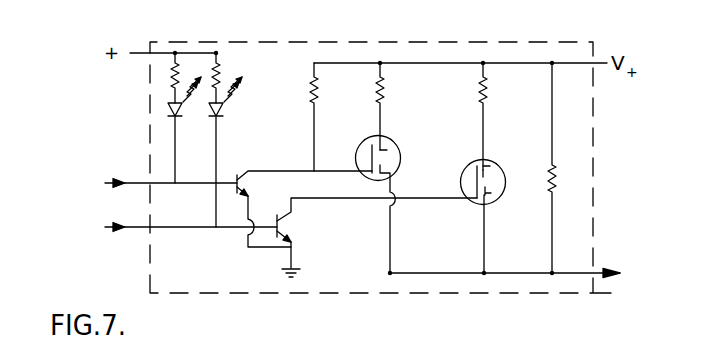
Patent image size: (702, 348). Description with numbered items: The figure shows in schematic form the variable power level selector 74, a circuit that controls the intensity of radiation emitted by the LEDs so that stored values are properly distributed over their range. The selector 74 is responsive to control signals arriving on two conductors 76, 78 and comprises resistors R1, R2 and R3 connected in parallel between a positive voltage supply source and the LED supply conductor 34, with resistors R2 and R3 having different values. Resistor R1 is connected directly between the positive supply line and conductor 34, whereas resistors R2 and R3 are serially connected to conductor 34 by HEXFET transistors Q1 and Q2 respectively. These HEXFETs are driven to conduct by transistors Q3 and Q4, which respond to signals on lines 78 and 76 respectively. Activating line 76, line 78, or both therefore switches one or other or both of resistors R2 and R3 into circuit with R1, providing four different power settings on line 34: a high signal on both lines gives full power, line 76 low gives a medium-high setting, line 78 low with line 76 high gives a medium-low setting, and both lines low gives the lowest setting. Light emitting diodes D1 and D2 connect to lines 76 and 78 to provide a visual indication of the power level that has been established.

The LED supply conductor 34 is at (597, 272).
The variable power level selector 74 is at (466, 294).
The conductor 76 is at (157, 184).
The conductor 78 is at (177, 228).
The light emitting diode D1 is at (230, 140).
The light emitting diode D2 is at (184, 118).
The HEXFET transistor Q1 is at (505, 178).
The HEXFET transistor Q2 is at (400, 165).
The transistor Q3 is at (295, 226).
The transistor Q4 is at (237, 174).
The resistor R1 is at (566, 168).
The resistor R2 is at (498, 116).
The resistor R3 is at (395, 106).